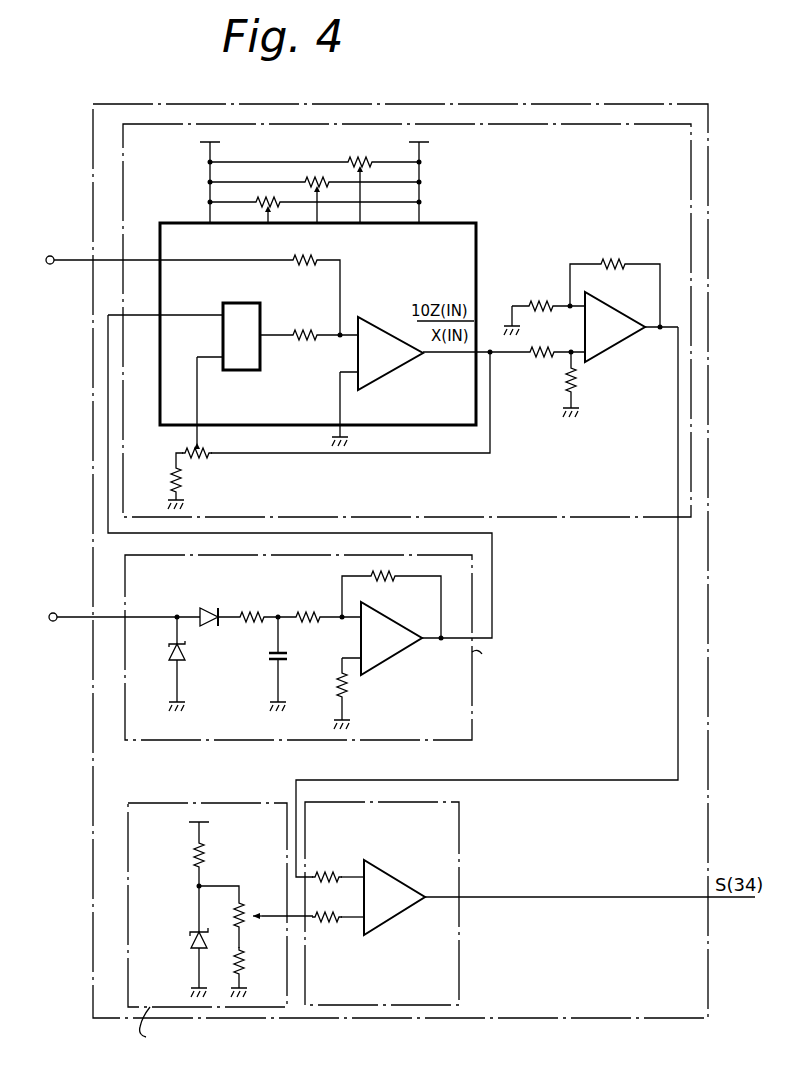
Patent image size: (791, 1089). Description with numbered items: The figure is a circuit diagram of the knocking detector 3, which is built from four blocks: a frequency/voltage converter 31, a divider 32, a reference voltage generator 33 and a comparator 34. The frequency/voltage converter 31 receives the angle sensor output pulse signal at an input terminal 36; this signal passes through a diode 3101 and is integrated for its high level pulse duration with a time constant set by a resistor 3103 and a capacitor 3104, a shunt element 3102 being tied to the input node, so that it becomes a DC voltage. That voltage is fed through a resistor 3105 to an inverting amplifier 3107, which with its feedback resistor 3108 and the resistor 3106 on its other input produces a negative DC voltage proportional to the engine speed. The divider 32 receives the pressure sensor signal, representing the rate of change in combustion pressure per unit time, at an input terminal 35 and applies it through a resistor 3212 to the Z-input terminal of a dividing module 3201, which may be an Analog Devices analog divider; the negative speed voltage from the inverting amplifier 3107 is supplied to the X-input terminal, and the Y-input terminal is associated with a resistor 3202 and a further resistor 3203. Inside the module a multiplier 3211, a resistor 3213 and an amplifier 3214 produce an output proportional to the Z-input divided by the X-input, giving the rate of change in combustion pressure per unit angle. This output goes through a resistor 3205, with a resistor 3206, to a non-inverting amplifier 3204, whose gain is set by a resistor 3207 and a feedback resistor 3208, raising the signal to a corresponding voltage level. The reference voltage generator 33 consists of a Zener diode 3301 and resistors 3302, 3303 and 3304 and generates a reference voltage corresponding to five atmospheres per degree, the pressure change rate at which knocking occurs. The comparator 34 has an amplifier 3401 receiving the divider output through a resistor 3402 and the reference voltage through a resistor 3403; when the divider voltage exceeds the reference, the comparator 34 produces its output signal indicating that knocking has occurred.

The knocking detector 3 is at (438, 104).
The frequency/voltage converter 31 is at (472, 705).
The divider 32 is at (590, 517).
The reference voltage generator 33 is at (217, 803).
The comparator 34 is at (459, 835).
The input terminal S(1) 35 is at (73, 262).
The input terminal S(2) 36 is at (73, 619).
The diode 3101 is at (203, 604).
The zener diode 3102 is at (186, 658).
The resistor 3103 is at (260, 608).
The capacitor 3104 is at (288, 655).
The resistor 3105 is at (309, 608).
The resistor 3106 is at (348, 696).
The inverting amplifier 3107 is at (411, 657).
The feedback resistor 3108 is at (391, 582).
The dividing module 3201 is at (477, 235).
The resistor 3202 is at (209, 462).
The resistor 3203 is at (168, 472).
The non-inverting amplifier 3204 is at (622, 346).
The resistor 3205 is at (538, 357).
The resistor 3206 is at (576, 392).
The resistor 3207 is at (538, 301).
The feedback resistor 3208 is at (619, 259).
The multiplier 3211 is at (264, 309).
The resistor 3212 is at (305, 265).
The resistor 3213 is at (304, 341).
The operational amplifier 3214 is at (373, 319).
The Zener diode 3301 is at (196, 937).
The resistor 3302 is at (246, 896).
The resistor 3303 is at (236, 964).
The resistor 3304 is at (206, 857).
The comparator amplifier 3401 is at (405, 878).
The resistor 3402 is at (330, 870).
The resistor 3403 is at (333, 924).